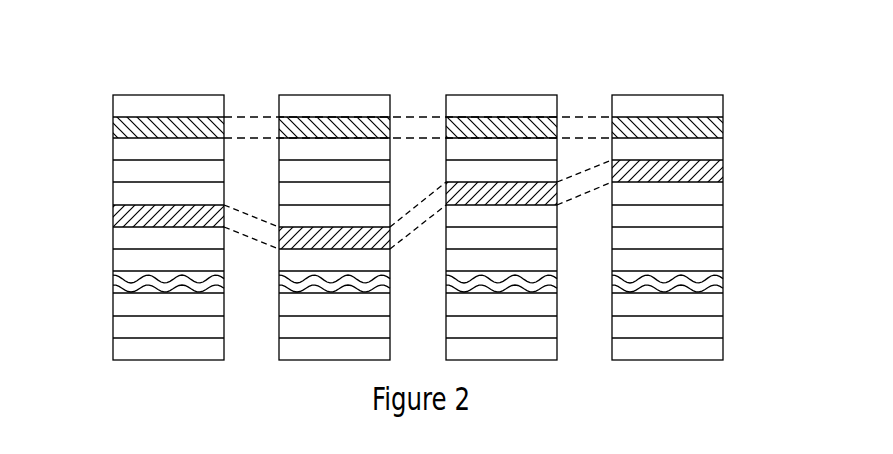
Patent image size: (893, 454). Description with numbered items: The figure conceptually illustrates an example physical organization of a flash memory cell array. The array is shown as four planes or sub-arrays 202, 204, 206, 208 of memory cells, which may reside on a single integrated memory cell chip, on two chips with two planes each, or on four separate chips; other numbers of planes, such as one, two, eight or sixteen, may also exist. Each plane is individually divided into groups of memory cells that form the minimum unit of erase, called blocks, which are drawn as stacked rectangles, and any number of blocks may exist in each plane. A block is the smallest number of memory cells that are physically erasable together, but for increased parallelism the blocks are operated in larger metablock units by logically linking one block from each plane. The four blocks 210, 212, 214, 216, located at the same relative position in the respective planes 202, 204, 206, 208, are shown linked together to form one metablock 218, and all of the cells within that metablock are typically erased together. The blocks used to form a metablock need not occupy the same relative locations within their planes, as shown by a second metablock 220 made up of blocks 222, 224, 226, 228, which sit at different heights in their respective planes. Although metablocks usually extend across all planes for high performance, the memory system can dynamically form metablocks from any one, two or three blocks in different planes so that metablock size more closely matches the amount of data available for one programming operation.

The plane 202 is at (166, 88).
The plane 204 is at (336, 88).
The plane 206 is at (500, 90).
The plane 208 is at (675, 88).
The block 210 is at (153, 128).
The block 212 is at (320, 128).
The block 214 is at (486, 128).
The block 216 is at (697, 129).
The metablock 218 is at (588, 123).
The second metablock 220 is at (586, 181).
The block 222 is at (150, 216).
The block 224 is at (310, 243).
The block 226 is at (490, 192).
The block 228 is at (697, 171).